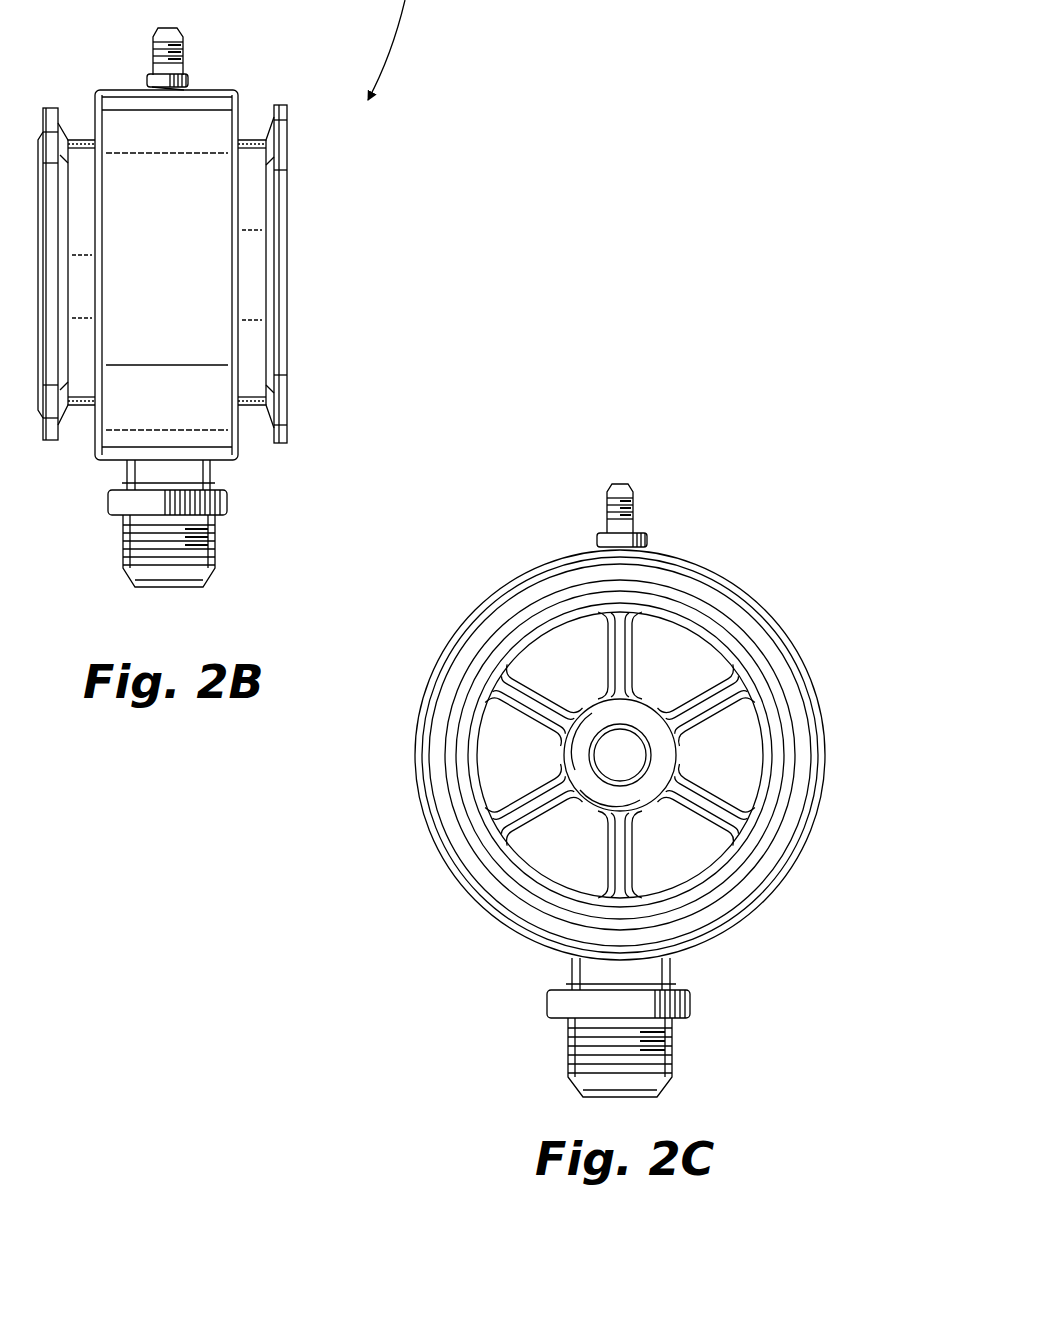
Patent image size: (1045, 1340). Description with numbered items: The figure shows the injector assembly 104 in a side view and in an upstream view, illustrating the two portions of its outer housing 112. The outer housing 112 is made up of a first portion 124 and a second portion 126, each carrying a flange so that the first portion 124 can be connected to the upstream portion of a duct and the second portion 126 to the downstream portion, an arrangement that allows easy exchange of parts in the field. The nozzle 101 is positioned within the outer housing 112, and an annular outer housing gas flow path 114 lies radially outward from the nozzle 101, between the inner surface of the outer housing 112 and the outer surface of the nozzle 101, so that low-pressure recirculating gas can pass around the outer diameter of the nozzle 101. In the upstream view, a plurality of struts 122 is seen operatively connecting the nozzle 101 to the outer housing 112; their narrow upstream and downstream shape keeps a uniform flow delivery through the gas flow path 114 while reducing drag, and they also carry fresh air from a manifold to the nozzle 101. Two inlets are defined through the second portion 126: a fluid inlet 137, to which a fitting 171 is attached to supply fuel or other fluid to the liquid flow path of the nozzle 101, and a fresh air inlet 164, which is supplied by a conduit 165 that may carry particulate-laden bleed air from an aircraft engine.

In FIG. 2C, the nozzle 101 is at (652, 769).
In FIG. 2C, the injector assembly 104 is at (779, 575).
In FIG. 2B, the outer housing 112 is at (212, 88).
In FIG. 2C, the annular outer housing gas flow path 114 is at (690, 671).
In FIG. 2C, the struts 122 is at (533, 710).
In FIG. 2B, the first portion of the outer housing 124 is at (257, 343).
In FIG. 2B, the second portion of the outer housing 126 is at (117, 88).
In FIG. 2C, the fluid inlet 137 is at (593, 543).
In FIG. 2B, the fresh air inlet 164 is at (210, 462).
In FIG. 2C, the fresh air inlet 164 is at (667, 960).
In FIG. 2B, the conduit 165 is at (113, 537).
In FIG. 2C, the conduit 165 is at (550, 1057).
In FIG. 2C, the fitting 171 is at (600, 500).